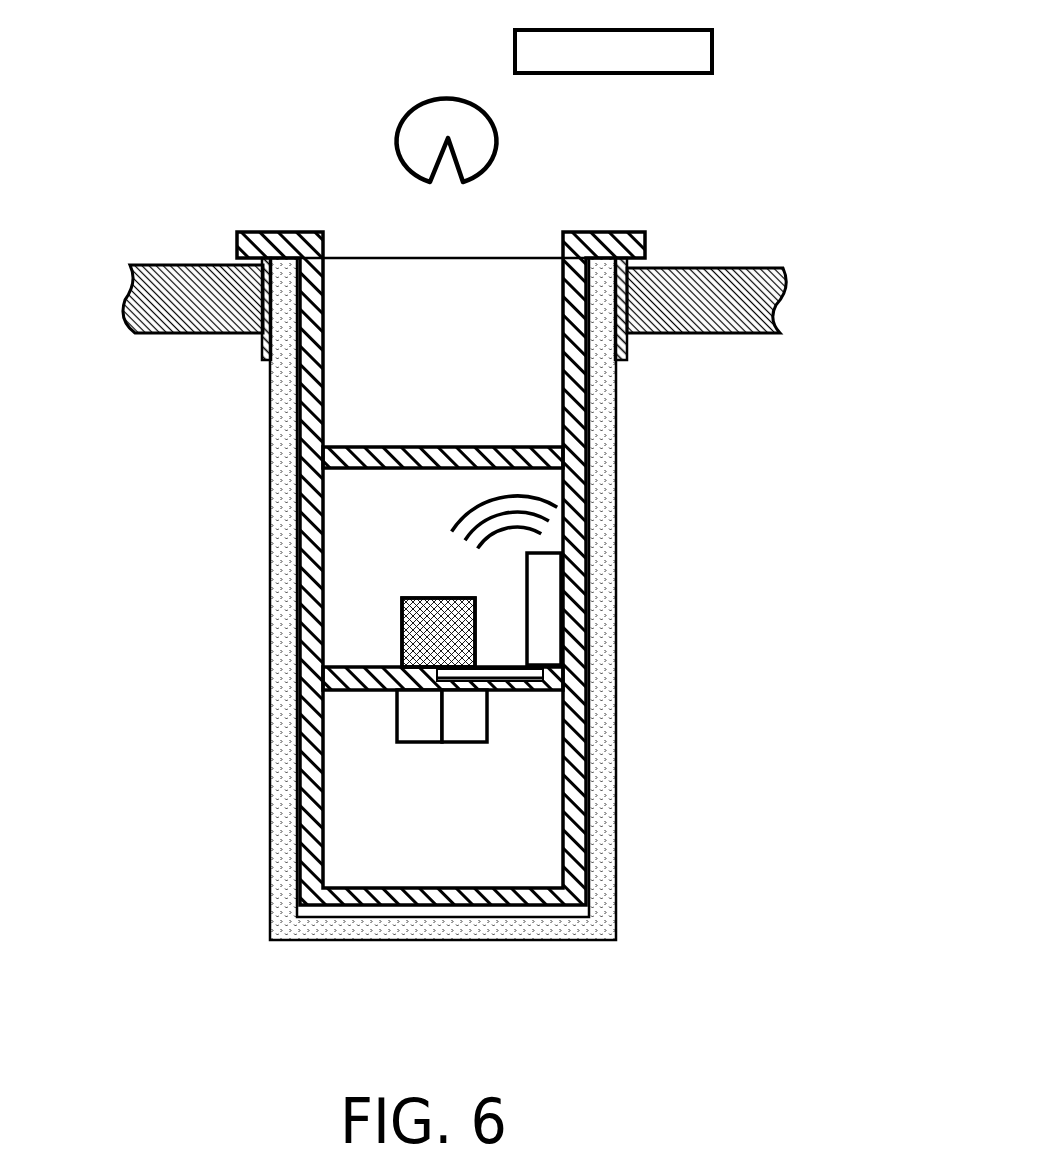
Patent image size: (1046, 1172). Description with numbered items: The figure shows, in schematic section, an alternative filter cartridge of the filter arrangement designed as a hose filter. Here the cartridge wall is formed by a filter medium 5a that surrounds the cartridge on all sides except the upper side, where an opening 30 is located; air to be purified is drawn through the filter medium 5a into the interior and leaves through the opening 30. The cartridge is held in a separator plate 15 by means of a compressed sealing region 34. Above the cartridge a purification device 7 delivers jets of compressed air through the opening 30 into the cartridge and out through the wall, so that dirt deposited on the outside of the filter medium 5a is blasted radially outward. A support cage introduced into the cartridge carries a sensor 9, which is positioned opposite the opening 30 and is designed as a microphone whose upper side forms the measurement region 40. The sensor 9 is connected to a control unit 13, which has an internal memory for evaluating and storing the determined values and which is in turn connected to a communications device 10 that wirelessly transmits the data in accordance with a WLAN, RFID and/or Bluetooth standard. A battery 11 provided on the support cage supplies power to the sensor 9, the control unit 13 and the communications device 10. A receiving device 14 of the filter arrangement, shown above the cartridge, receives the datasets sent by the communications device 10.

The filter medium 5a is at (605, 463).
The opening 30 is at (483, 220).
The compressed sealing region 34 is at (627, 348).
The separator plate 15 is at (163, 315).
The purification device 7 is at (430, 120).
The receiving device 14 is at (677, 52).
The measurement region 40 is at (437, 598).
The sensor 9 is at (402, 632).
The communications device 10 is at (547, 587).
The battery 11 is at (397, 717).
The control unit 13 is at (487, 715).